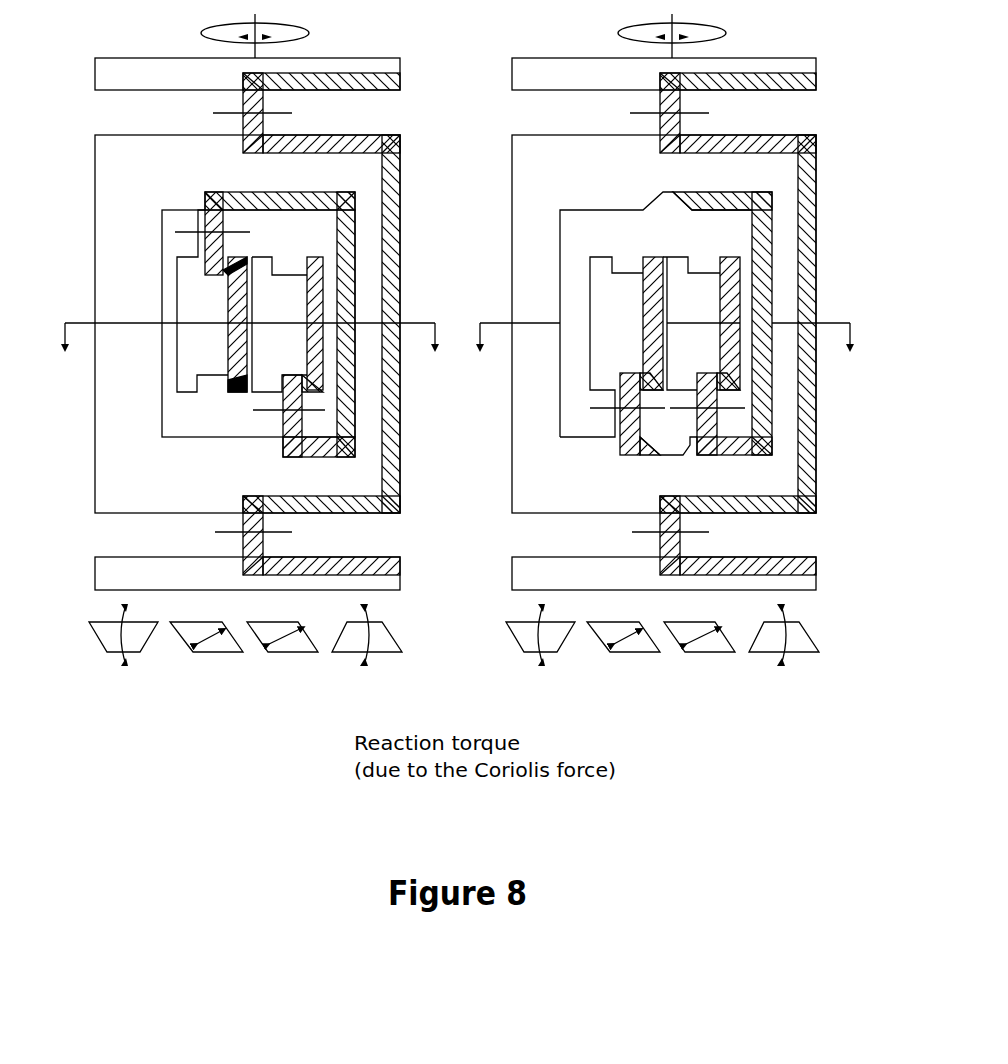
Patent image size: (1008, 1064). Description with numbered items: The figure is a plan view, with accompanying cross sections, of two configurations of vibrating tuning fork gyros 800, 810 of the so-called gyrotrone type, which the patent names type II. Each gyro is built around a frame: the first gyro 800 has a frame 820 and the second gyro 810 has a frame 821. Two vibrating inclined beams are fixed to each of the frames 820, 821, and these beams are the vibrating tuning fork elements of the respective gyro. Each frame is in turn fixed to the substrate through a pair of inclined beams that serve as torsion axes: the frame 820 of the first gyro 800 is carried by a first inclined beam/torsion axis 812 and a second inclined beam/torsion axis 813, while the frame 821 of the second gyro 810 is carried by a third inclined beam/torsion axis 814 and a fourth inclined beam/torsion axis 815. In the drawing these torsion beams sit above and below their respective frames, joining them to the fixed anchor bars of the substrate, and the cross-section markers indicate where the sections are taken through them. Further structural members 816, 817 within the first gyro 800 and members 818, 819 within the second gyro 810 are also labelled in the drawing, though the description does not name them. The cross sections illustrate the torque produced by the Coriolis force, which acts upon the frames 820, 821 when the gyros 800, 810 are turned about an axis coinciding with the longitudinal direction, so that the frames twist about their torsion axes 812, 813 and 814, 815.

The vibrating tuning fork gyro 800 is at (247, 355).
The vibrating tuning fork gyro 810 is at (694, 355).
The inclined beam/torsion axis 812 is at (263, 123).
The inclined beam/torsion axis 813 is at (263, 543).
The inclined beam/torsion axis 814 is at (699, 113).
The inclined beam/torsion axis 815 is at (700, 535).
The inner frame upper bracket of first structure 816 is at (223, 246).
The inner frame lower bracket of first structure 817 is at (283, 428).
The inner flexure post of second structure 818 is at (640, 437).
The inner flexure bracket of second structure 819 is at (717, 436).
The frame 820 is at (400, 270).
The frame 821 is at (703, 324).